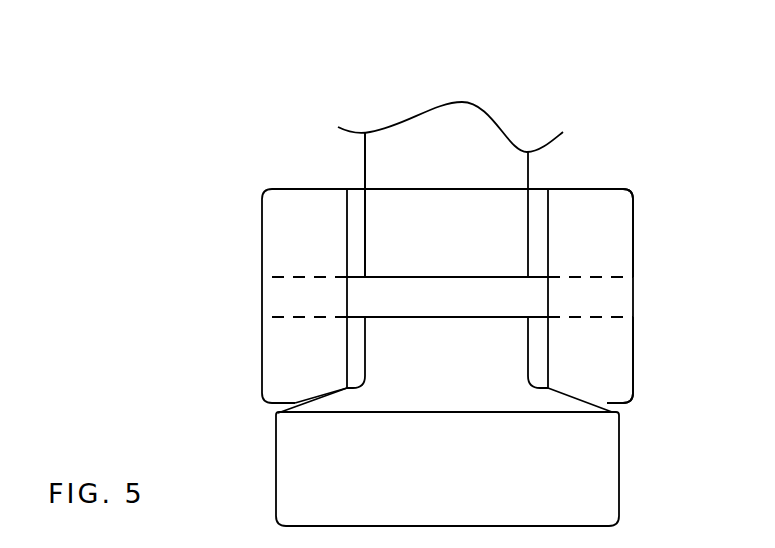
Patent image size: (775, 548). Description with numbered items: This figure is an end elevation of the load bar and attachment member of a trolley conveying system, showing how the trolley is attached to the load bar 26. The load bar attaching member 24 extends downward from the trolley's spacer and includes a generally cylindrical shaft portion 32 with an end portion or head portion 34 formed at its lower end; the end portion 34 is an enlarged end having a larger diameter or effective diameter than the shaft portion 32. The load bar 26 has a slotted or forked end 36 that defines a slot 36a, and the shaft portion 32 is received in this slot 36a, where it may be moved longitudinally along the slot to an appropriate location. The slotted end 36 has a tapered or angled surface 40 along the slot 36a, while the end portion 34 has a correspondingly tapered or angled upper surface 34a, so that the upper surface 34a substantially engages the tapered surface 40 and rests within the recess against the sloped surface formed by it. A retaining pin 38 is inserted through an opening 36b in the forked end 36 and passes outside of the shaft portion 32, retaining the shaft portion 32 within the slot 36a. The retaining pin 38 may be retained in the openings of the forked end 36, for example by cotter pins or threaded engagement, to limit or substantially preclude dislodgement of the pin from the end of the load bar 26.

The load bar attaching member 24 is at (512, 98).
The shaft portion 32 is at (385, 161).
The slotted or forked end 36 is at (283, 243).
The slot 36a is at (540, 203).
The opening 36b is at (595, 317).
The load bar 26 is at (633, 262).
The retaining pin 38 is at (418, 307).
The tapered or angled upper surface 34a is at (607, 407).
The tapered or angled surface 40 is at (322, 395).
The end portion or head portion 34 is at (602, 472).